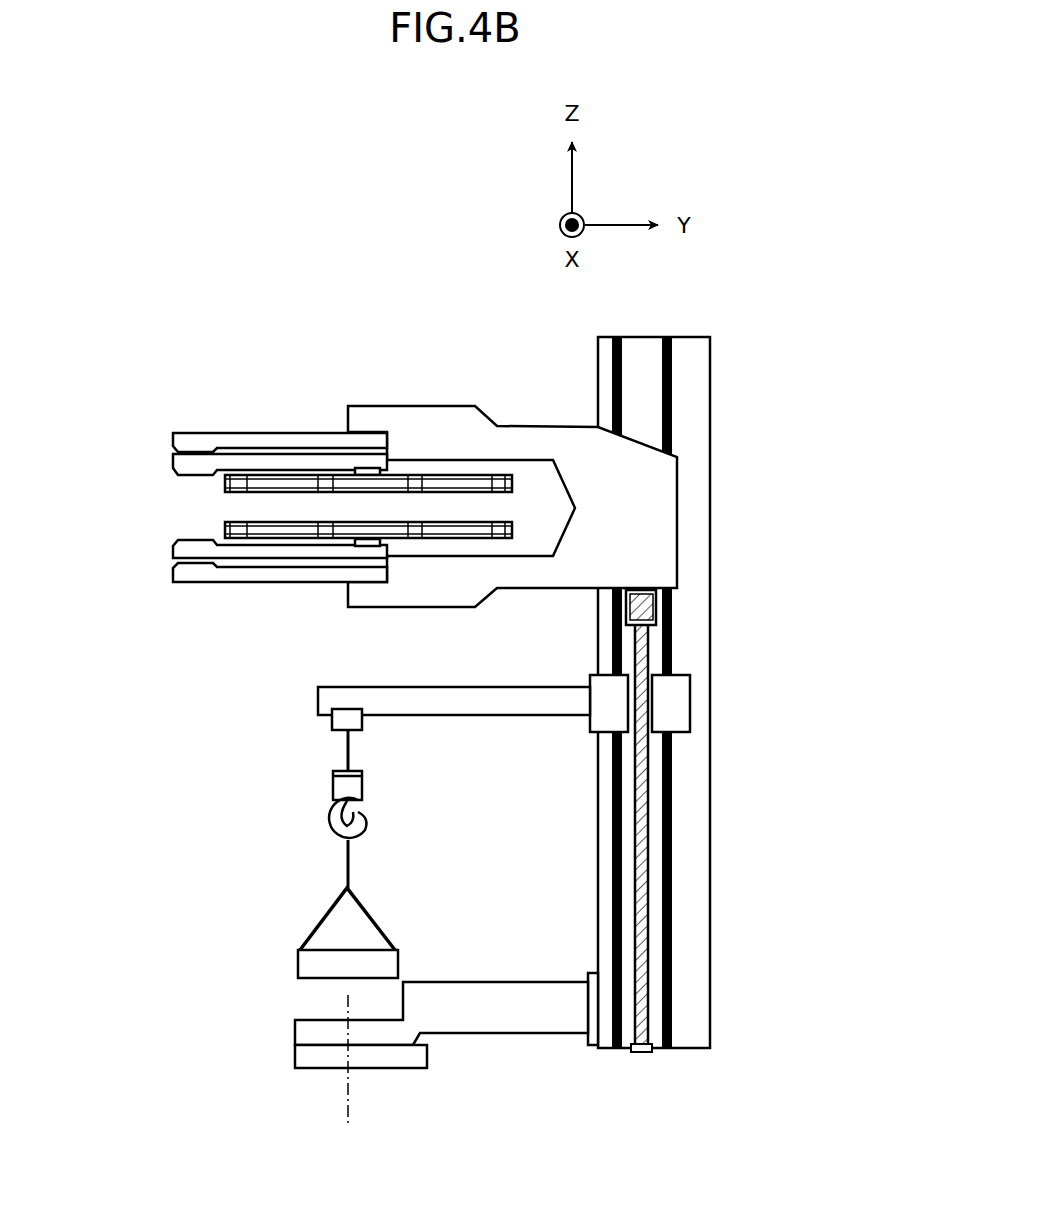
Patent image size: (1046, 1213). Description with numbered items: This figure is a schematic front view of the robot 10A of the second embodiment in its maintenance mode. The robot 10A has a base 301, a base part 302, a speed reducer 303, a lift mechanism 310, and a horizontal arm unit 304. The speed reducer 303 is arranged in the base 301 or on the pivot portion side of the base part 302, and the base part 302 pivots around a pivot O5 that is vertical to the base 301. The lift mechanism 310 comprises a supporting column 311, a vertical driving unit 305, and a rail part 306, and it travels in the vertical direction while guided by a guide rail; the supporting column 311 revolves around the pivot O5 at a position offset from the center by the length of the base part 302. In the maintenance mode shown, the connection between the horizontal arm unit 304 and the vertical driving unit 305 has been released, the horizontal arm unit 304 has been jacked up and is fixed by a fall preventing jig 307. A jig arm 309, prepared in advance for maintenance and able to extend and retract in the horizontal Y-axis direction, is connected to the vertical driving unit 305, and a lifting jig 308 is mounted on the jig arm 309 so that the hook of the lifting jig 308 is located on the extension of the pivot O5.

The robot 10A is at (198, 190).
The base 301 is at (307, 1060).
The base part 302 is at (503, 1025).
The speed reducer 303 is at (305, 965).
The horizontal arm unit 304 is at (163, 505).
The vertical driving unit 305 is at (682, 703).
The rail part 306 is at (622, 877).
The fall preventing jig 307 is at (643, 641).
The lifting jig 308 is at (312, 788).
The jig arm 309 is at (473, 727).
The lift mechanism 310 is at (757, 545).
The supporting column 311 is at (697, 996).
The pivot O5 is at (346, 1076).